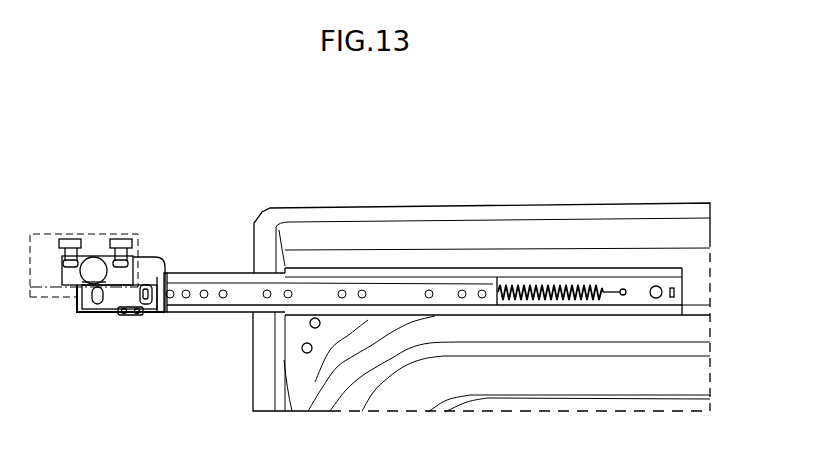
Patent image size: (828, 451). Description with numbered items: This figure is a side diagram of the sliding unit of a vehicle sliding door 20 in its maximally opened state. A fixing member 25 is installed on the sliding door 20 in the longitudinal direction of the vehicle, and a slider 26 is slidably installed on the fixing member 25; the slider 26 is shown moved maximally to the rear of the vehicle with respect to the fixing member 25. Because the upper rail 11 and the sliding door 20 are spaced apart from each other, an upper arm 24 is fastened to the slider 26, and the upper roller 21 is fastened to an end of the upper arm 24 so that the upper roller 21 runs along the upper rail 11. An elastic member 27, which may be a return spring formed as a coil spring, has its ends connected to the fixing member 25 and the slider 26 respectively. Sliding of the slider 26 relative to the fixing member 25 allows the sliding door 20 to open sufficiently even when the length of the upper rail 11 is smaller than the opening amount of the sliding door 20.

The upper rail 11 is at (53, 295).
The sliding door 20 is at (460, 237).
The upper roller 21 is at (71, 241).
The upper arm 24 is at (167, 283).
The fixing member 25 is at (605, 276).
The slider 26 is at (242, 289).
The elastic member 27 is at (553, 283).